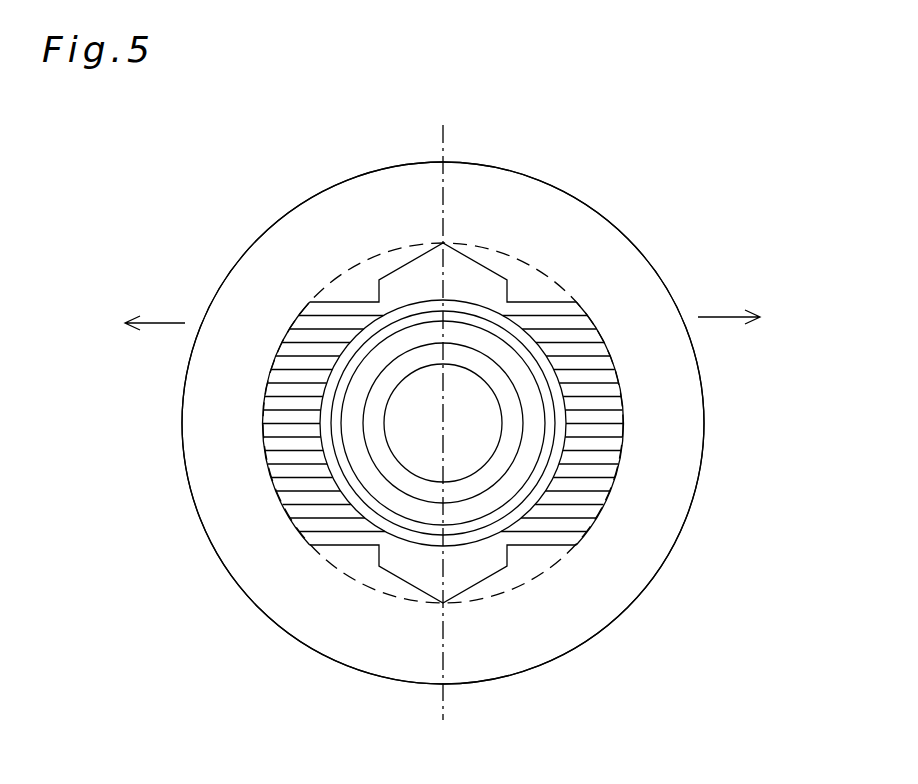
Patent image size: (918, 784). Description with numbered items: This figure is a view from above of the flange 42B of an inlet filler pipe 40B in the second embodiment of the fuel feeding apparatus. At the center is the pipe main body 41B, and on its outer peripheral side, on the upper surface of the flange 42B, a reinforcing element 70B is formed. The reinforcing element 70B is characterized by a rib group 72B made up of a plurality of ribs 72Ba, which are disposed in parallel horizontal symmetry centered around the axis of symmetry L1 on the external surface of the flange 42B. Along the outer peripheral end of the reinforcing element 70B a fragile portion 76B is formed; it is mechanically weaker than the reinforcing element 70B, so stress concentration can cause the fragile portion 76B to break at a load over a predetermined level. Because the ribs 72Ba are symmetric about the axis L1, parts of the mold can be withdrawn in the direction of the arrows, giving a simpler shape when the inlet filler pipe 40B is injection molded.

The axis of symmetry L1 is at (445, 145).
The inlet filler pipe 40B is at (699, 282).
The pipe main body 41B is at (476, 308).
The flange 42B is at (598, 238).
The reinforcing element 70B is at (611, 338).
The rib group 72B is at (266, 387).
The ribs 72Ba is at (613, 409).
The fragile portion 76B is at (555, 563).